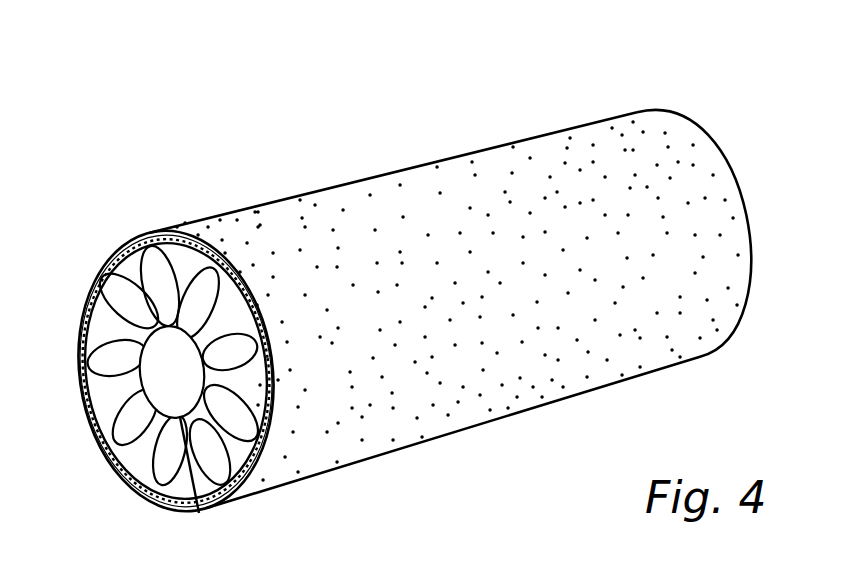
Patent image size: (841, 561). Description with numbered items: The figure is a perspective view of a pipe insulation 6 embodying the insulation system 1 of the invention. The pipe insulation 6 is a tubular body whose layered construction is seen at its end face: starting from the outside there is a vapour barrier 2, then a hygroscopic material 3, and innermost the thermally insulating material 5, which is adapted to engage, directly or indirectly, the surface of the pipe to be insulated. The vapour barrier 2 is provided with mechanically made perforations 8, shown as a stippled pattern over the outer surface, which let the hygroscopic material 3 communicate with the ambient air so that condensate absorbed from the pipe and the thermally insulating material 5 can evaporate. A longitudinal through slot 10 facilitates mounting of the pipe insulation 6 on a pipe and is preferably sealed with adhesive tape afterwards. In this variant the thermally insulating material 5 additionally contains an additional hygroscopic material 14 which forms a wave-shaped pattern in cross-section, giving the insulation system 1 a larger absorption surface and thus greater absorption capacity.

The insulation system 1 is at (450, 265).
The vapour barrier 2 is at (148, 388).
The hygroscopic material 3 is at (82, 310).
The thermally insulating material 5 is at (143, 461).
The pipe insulation 6 is at (457, 153).
The perforations 8 is at (273, 235).
The longitudinal through slot 10 is at (210, 497).
The additional hygroscopic material 14 is at (85, 400).